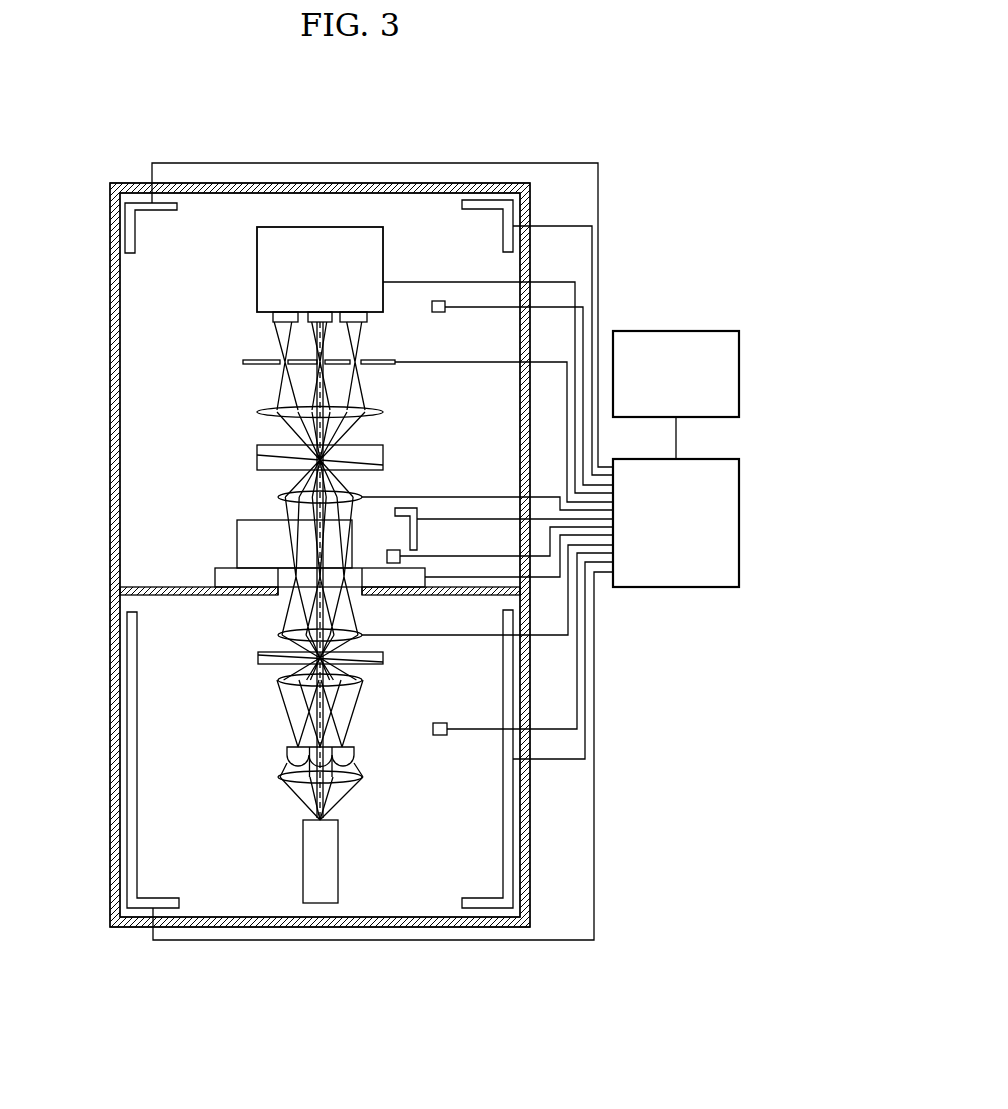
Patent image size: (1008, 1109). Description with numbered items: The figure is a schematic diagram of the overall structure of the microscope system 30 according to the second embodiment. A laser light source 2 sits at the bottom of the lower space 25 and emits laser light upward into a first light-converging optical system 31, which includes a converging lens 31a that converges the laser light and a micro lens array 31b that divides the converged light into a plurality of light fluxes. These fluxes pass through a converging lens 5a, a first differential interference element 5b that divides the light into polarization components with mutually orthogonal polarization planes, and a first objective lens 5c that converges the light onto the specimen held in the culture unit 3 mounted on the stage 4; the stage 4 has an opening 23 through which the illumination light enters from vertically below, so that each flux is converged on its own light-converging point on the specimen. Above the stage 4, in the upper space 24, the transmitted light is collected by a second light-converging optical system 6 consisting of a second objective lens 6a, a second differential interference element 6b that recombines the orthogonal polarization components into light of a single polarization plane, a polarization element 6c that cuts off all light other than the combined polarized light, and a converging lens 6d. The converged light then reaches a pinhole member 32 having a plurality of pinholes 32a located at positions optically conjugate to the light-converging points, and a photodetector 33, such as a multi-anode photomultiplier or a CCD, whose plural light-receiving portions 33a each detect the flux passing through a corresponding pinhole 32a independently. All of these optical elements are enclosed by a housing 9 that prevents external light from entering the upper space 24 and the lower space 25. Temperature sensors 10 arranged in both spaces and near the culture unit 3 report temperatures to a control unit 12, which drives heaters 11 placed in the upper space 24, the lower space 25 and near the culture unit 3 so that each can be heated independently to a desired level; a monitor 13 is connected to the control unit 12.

The laser light source 2 is at (303, 858).
The culture unit 3 is at (237, 530).
The stage 4 is at (215, 575).
The converging lens 5a is at (278, 680).
The first differential interference element 5b is at (258, 658).
The first objective lens 5c is at (278, 636).
The second light-converging optical system 6 is at (398, 450).
The second objective lens 6a is at (363, 497).
The second differential interference element 6b is at (384, 463).
The polarization element 6c is at (384, 447).
The converging lens 6d is at (384, 412).
The housing 9 is at (111, 376).
The temperature sensors 10 is at (447, 312).
The heaters 11 is at (170, 212).
The control unit 12 is at (668, 588).
The monitor 13 is at (669, 331).
The opening 23 is at (362, 590).
The upper space 24 is at (150, 303).
The lower space 25 is at (160, 660).
The microscope system 30 is at (610, 121).
The first light-converging optical system 31 is at (314, 789).
The converging lens 31a is at (279, 777).
The micro lens array 31b is at (287, 750).
The pinhole member 32 is at (243, 362).
The pinholes 32a is at (319, 360).
The photodetector 33 is at (384, 240).
The light-receiving portions 33a is at (328, 312).